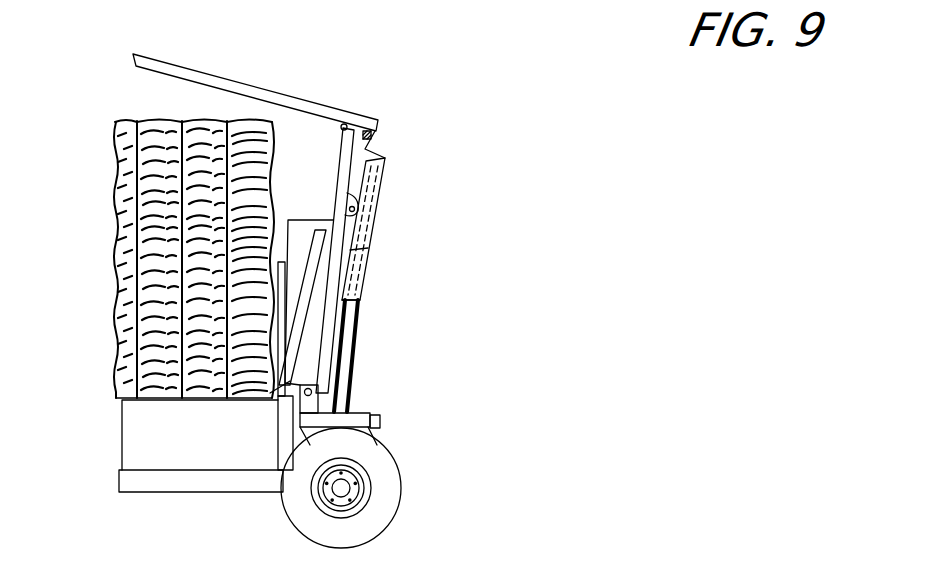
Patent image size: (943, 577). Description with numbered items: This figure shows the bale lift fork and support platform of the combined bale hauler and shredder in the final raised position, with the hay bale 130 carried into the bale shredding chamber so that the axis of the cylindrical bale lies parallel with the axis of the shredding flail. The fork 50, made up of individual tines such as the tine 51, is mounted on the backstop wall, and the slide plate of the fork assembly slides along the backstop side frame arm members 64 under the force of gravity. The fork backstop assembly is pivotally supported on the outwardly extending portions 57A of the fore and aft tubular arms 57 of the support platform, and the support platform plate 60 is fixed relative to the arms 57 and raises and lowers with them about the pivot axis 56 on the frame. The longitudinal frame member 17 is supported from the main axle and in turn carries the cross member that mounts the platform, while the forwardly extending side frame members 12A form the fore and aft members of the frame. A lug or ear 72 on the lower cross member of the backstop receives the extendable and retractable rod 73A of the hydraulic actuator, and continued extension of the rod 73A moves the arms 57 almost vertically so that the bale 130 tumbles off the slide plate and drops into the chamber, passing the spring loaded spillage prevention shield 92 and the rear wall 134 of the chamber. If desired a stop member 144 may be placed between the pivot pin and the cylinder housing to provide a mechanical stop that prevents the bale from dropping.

The side frame members 12A is at (227, 495).
The longitudinal frame member 17 is at (372, 417).
The fork 50 is at (296, 86).
The tine 51 is at (176, 62).
The pivot axis 56 is at (312, 392).
The tubular arms 57 is at (320, 347).
The outwardly extending portions 57A is at (340, 247).
The support platform plate 60 is at (277, 398).
The backstop side frame arm members 64 is at (346, 162).
The lug or ear 72 is at (372, 160).
The extendable and retractable rod 73A is at (382, 214).
The spring loaded spillage prevention shield 92 is at (311, 188).
The hay bale 130 is at (147, 124).
The rear wall 134 is at (277, 450).
The stop member 144 is at (358, 281).